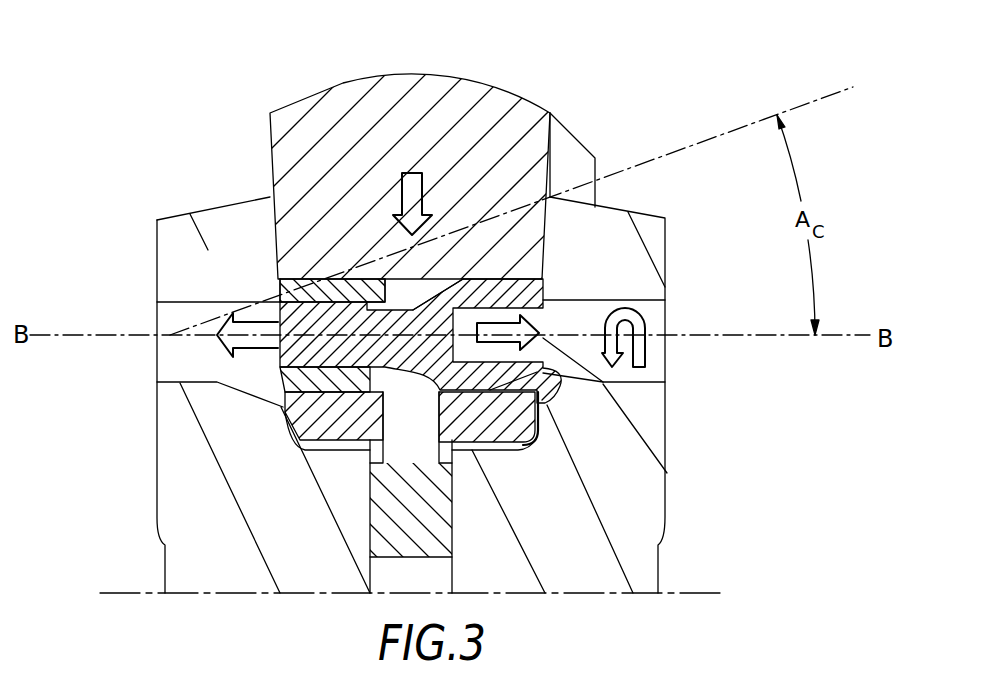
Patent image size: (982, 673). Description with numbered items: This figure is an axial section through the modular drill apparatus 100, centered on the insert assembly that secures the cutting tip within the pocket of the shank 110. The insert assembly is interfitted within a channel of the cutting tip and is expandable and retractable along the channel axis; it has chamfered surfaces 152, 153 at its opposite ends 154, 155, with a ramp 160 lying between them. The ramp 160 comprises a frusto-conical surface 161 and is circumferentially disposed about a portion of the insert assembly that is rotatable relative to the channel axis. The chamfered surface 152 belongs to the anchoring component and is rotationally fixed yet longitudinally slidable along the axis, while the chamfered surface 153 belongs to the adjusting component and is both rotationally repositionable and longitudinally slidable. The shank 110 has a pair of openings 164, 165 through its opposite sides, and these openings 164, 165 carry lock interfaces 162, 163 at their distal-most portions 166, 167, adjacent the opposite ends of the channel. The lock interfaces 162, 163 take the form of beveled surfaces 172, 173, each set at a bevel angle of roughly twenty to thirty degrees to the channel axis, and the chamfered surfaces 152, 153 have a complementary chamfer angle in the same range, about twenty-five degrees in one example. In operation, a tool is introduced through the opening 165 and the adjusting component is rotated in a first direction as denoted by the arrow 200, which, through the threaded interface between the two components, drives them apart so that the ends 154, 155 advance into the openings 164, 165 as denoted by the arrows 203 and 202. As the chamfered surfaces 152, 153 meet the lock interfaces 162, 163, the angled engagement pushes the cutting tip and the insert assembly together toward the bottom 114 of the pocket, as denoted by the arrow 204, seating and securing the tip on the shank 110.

The modular drill apparatus 100 is at (552, 86).
The shank 110 is at (632, 205).
The bottom 114 is at (478, 451).
The chamfered surface 152 is at (303, 277).
The chamfered surface 153 is at (507, 277).
The end 154 is at (283, 383).
The end 155 is at (542, 399).
The ramp 160 is at (490, 388).
The frusto-conical surface 161 is at (398, 367).
The lock interface 162 is at (255, 250).
The lock interface 163 is at (553, 276).
The opening 164 is at (138, 355).
The opening 165 is at (682, 377).
The distal-most portion 166 is at (297, 330).
The distal-most portion 167 is at (557, 337).
The beveled surface 172 is at (269, 293).
The beveled surface 173 is at (557, 303).
The arrow 200 is at (647, 330).
The arrow 202 is at (492, 307).
The arrow 203 is at (228, 330).
The arrow 204 is at (397, 197).